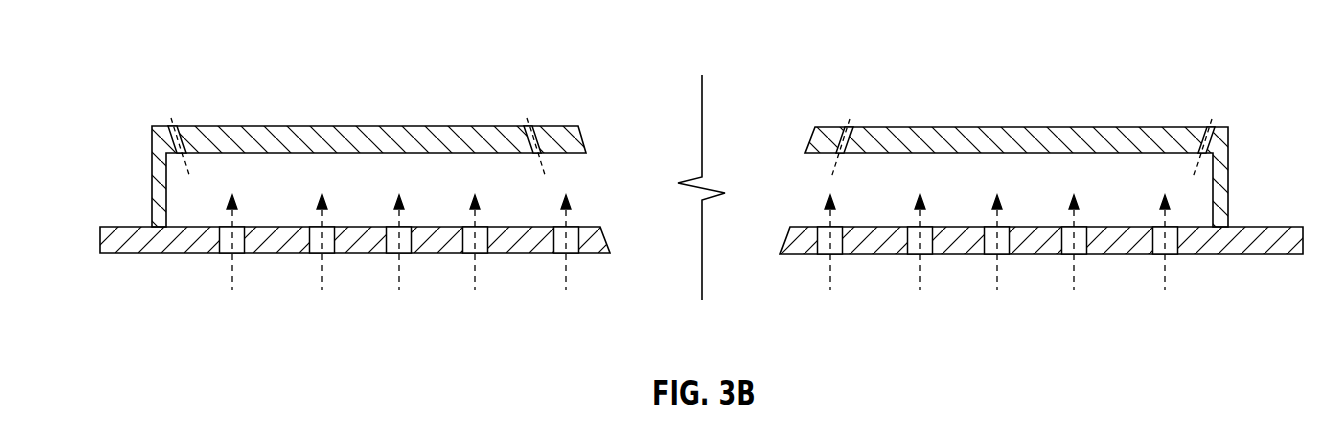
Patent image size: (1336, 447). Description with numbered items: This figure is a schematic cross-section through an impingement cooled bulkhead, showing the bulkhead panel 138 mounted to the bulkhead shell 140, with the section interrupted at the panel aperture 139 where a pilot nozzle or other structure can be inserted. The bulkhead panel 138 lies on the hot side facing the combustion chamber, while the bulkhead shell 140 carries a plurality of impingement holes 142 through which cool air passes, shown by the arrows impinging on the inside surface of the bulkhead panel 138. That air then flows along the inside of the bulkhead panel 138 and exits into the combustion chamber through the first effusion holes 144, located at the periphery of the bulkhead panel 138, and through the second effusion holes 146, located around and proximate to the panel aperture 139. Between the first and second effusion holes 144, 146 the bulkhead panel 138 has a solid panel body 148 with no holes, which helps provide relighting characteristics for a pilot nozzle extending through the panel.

The bulkhead panel 138 is at (973, 140).
The panel aperture 139 is at (645, 129).
The bulkhead shell 140 is at (1253, 244).
The impingement holes 142 is at (407, 270).
The first effusion holes 144 is at (180, 121).
The second effusion holes 146 is at (530, 113).
The panel body 148 is at (296, 124).